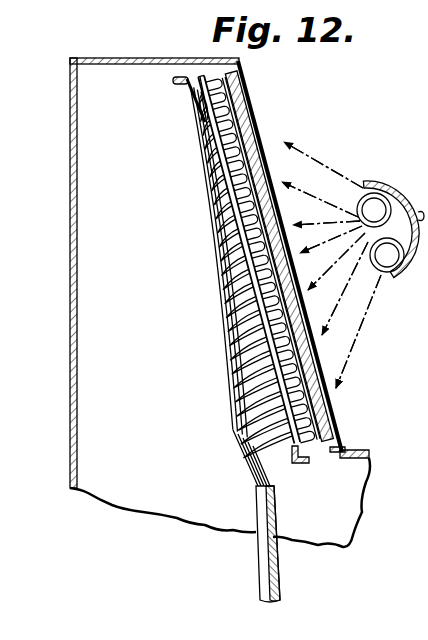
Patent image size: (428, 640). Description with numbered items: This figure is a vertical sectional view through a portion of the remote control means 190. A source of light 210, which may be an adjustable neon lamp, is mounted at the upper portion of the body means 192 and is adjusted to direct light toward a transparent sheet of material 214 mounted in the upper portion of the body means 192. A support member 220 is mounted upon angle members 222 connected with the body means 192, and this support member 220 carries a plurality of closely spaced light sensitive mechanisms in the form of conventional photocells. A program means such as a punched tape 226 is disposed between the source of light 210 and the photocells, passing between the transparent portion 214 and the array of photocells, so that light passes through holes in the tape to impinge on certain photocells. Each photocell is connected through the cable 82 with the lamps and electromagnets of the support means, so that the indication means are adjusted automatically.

The housing 190 is at (74, 44).
The body means 192 is at (70, 316).
The support member 220 is at (200, 77).
The angle members 222 is at (183, 87).
The transparent sheet of material 214 is at (252, 108).
The source of light 210 is at (384, 170).
The punched tape 226 is at (338, 382).
The cable 82 is at (282, 584).